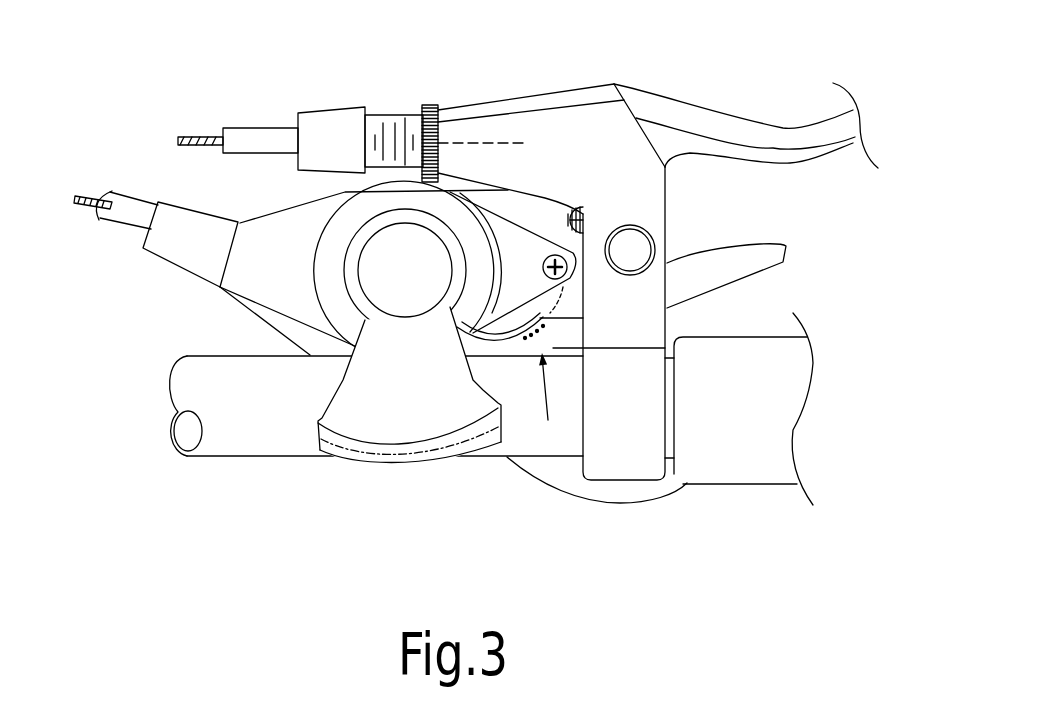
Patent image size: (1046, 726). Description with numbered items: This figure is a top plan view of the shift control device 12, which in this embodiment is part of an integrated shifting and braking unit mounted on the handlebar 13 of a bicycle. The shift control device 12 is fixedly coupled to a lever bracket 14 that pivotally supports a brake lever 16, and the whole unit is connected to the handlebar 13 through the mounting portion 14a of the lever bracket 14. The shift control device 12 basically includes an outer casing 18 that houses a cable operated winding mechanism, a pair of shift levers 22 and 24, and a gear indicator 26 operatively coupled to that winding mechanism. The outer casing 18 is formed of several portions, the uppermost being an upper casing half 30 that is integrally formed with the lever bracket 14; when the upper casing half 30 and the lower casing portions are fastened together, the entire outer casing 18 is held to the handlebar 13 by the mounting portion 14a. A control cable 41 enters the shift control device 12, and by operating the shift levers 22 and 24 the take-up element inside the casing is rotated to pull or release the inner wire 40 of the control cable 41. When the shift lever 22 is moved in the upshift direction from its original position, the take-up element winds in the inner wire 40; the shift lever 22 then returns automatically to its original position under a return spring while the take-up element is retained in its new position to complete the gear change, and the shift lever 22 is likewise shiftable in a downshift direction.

The shift control device 12 is at (238, 312).
The handlebar 13 is at (247, 445).
The lever bracket 14 is at (533, 96).
The mounting portion 14a is at (652, 328).
The brake lever 16 is at (707, 107).
The outer casing 18 is at (292, 228).
The shift lever 22 is at (618, 493).
The shift lever 24 is at (733, 257).
The gear indicator 26 is at (393, 417).
The upper casing half 30 is at (243, 285).
The inner wire 40 is at (82, 198).
The control cable 41 is at (117, 227).